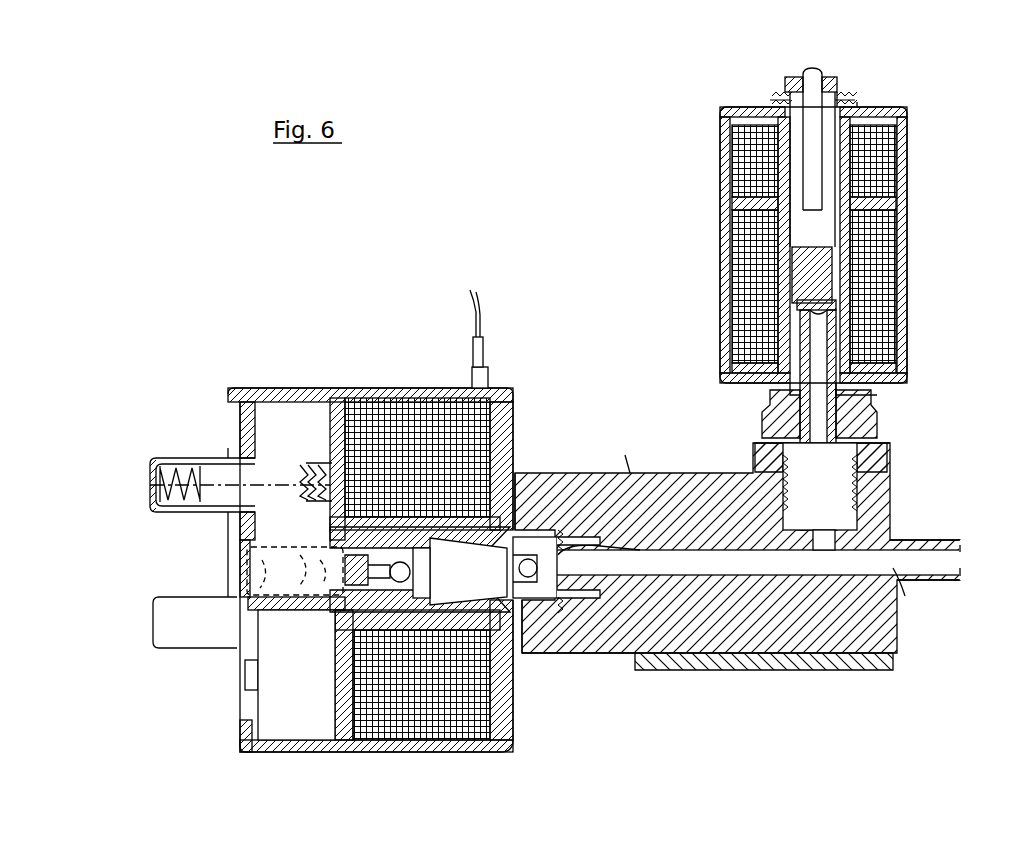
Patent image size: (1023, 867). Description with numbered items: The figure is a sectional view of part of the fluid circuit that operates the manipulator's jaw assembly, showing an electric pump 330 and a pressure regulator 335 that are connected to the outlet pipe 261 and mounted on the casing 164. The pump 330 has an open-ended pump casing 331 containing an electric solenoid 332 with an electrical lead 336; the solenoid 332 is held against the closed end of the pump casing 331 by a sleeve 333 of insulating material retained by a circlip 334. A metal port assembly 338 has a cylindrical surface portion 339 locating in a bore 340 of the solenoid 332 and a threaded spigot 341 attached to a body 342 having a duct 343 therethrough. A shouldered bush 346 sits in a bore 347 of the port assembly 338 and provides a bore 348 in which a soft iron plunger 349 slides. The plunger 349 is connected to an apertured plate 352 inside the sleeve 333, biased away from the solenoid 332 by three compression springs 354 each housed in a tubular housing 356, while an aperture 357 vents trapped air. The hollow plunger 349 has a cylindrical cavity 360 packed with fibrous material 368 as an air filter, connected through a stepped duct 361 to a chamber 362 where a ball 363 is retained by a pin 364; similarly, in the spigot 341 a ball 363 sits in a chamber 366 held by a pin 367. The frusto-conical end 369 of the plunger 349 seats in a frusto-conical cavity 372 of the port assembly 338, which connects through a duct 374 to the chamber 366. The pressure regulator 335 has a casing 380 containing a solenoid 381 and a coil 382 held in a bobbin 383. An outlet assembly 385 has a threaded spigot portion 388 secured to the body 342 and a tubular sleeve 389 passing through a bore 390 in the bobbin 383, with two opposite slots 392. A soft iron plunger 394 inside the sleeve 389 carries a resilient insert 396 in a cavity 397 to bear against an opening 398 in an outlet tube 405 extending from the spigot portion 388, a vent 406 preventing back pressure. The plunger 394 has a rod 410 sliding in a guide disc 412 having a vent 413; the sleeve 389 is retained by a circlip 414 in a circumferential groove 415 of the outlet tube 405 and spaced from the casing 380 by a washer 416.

The casing 164 is at (820, 672).
The outlet pipe 261 is at (940, 520).
The electric pump 330 is at (361, 380).
The pump casing 331 is at (326, 388).
The electric solenoid 332 is at (480, 410).
The sleeve 333 is at (303, 745).
The circlip 334 is at (238, 740).
The pressure regulator 335 is at (915, 101).
The electrical lead 336 is at (484, 350).
The port assembly 338 is at (650, 560).
The cylindrical surface portion 339 is at (555, 655).
The bore 340 is at (660, 520).
The threaded spigot 341 is at (790, 572).
The body 342 is at (748, 655).
The duct 343 is at (947, 614).
The shouldered bush 346 is at (335, 680).
The bore 347 is at (400, 640).
The bore 348 is at (335, 640).
The soft iron plunger 349 is at (318, 610).
The apertured plate 352 is at (235, 648).
The compression spring 354 is at (158, 482).
The tubular housing 356 is at (175, 460).
The aperture 357 is at (248, 680).
The cylindrical cavity 360 is at (310, 585).
The stepped duct 361 is at (305, 545).
The chamber 362 is at (467, 569).
The ball 363 is at (315, 465).
The pin 364 is at (560, 500).
The chamber 366 is at (710, 520).
The pin 367 is at (552, 572).
The fibrous material 368 is at (246, 567).
The frusto-conical end 369 is at (530, 640).
The frusto-conical cavity 372 is at (493, 590).
The duct 374 is at (640, 448).
The casing 380 is at (720, 178).
The solenoid 381 is at (868, 248).
The coil 382 is at (868, 155).
The bobbin 383 is at (758, 203).
The outlet assembly 385 is at (868, 428).
The threaded spigot portion 388 is at (868, 460).
The tubular sleeve 389 is at (780, 342).
The bore 390 is at (796, 270).
The slot 392 is at (745, 135).
The soft iron plunger 394 is at (784, 232).
The resilient insert 396 is at (830, 316).
The cavity 397 is at (838, 303).
The opening 398 is at (840, 340).
The outlet tube 405 is at (862, 398).
The vent 406 is at (775, 392).
The rod 410 is at (847, 105).
The guide disc 412 is at (812, 110).
The vent 413 is at (793, 80).
The circlip 414 is at (835, 98).
The circumferential groove 415 is at (778, 98).
The washer 416 is at (770, 104).